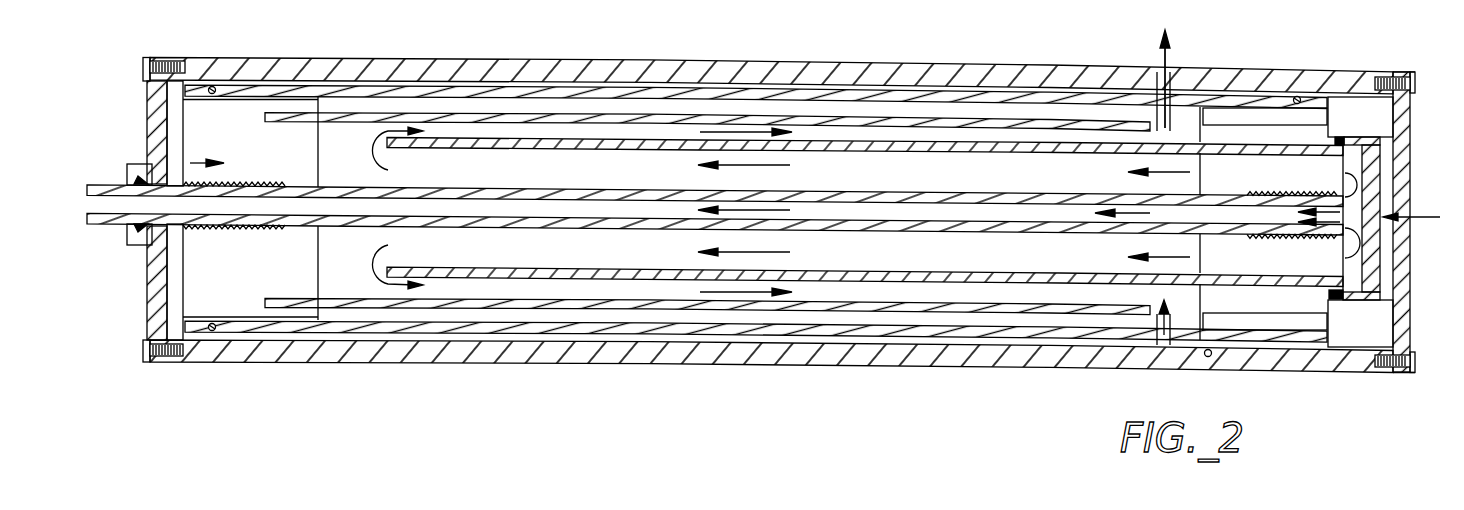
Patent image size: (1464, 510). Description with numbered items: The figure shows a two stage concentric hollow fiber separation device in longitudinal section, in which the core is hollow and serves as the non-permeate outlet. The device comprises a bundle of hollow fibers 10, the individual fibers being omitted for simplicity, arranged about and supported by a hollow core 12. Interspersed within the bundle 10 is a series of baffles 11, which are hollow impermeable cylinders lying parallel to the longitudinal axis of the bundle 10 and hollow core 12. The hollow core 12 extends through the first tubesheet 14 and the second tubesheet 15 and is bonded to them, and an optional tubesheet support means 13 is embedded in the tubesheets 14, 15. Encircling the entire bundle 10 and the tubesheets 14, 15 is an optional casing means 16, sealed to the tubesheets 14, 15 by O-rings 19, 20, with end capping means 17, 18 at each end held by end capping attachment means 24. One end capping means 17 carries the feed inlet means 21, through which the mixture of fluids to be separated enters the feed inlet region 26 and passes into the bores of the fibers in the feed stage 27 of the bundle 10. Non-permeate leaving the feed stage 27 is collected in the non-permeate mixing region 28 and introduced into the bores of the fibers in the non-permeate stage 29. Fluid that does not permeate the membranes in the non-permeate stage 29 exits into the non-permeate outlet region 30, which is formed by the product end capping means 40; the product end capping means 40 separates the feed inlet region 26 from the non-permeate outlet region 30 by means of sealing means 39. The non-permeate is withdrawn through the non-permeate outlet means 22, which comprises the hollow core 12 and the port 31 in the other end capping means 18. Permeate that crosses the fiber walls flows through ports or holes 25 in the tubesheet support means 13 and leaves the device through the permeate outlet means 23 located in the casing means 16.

The bundle of hollow fibers 10 is at (435, 292).
The baffles 11 is at (672, 128).
The hollow core 12 is at (873, 216).
The tubesheet support means 13 is at (1036, 82).
The first tubesheet 14 is at (1211, 352).
The second tubesheet 15 is at (216, 340).
The casing means 16 is at (302, 58).
The end capping means 17 is at (1411, 114).
The end capping means 18 is at (146, 326).
The O-ring 19 is at (1297, 96).
The O-ring 20 is at (214, 86).
The feed inlet means 21 is at (1416, 212).
The non-permeate outlet means 22 is at (128, 242).
The permeate outlet means 23 is at (1160, 74).
The end capping attachment means 24 is at (1413, 76).
The ports or holes 25 is at (1028, 94).
The feed inlet region 26 is at (1386, 124).
The feed stage 27 is at (1250, 132).
The non-permeate mixing region 28 is at (176, 102).
The non-permeate stage 29 is at (588, 262).
The non-permeate outlet region 30 is at (1357, 234).
The port 31 is at (127, 178).
The sealing means 39 is at (1340, 298).
The product end capping means 40 is at (1373, 262).